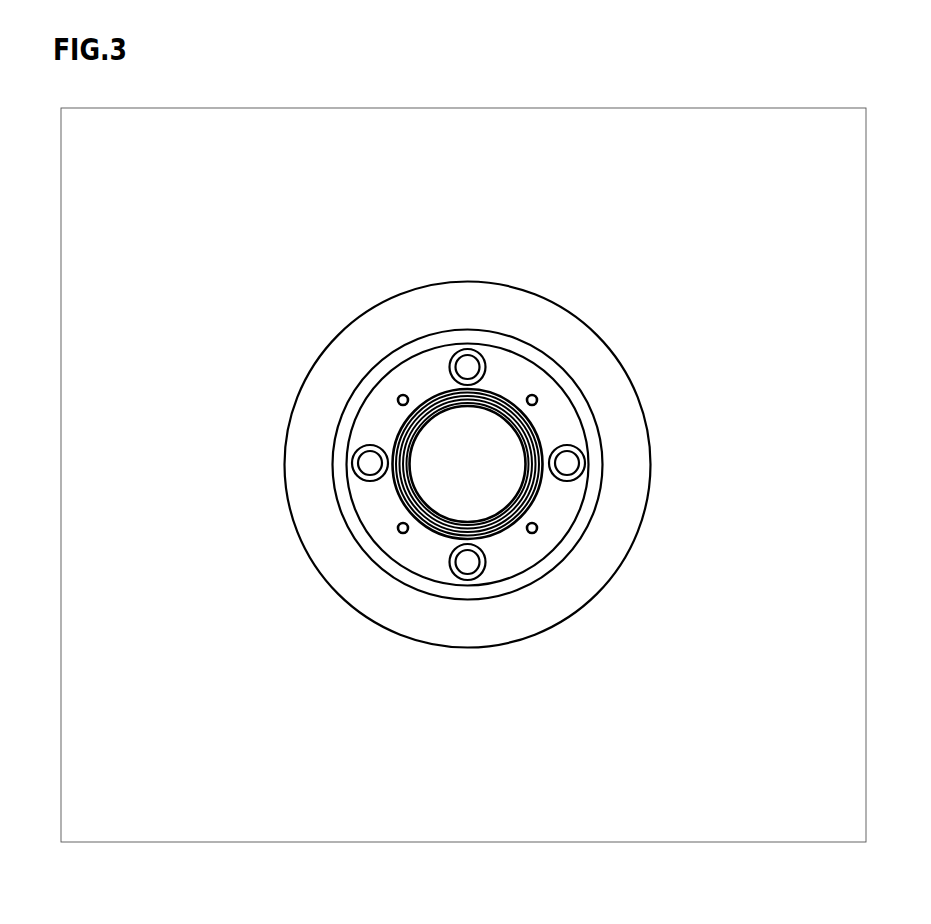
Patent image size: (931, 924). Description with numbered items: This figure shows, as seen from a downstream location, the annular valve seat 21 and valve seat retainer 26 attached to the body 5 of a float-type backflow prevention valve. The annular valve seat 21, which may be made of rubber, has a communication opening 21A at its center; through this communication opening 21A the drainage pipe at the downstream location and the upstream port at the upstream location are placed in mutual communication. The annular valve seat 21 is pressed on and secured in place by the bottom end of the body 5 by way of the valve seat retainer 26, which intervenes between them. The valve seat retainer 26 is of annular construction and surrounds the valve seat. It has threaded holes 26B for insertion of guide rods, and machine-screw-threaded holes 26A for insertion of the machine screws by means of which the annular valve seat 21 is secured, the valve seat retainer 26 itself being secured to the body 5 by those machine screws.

The body 5 is at (378, 337).
The annular valve seat 21 is at (545, 430).
The communication opening 21A is at (485, 483).
The valve seat retainer 26 is at (380, 513).
The machine-screw-threaded holes 26A is at (532, 400).
The threaded holes 26B is at (468, 367).